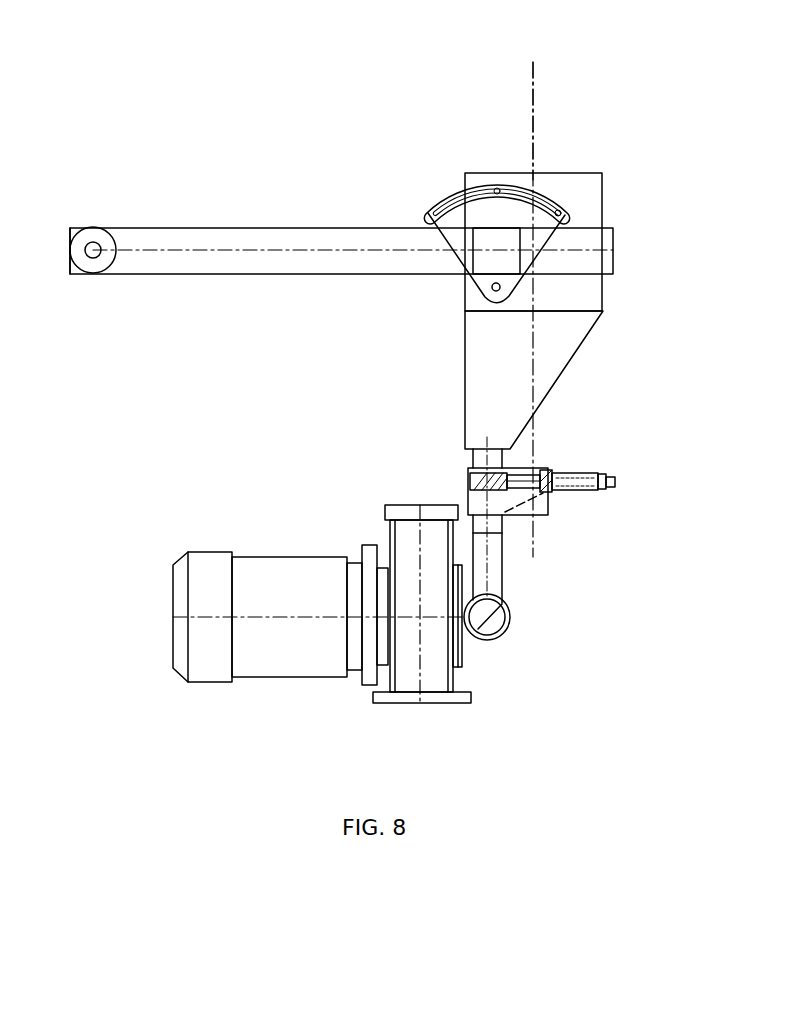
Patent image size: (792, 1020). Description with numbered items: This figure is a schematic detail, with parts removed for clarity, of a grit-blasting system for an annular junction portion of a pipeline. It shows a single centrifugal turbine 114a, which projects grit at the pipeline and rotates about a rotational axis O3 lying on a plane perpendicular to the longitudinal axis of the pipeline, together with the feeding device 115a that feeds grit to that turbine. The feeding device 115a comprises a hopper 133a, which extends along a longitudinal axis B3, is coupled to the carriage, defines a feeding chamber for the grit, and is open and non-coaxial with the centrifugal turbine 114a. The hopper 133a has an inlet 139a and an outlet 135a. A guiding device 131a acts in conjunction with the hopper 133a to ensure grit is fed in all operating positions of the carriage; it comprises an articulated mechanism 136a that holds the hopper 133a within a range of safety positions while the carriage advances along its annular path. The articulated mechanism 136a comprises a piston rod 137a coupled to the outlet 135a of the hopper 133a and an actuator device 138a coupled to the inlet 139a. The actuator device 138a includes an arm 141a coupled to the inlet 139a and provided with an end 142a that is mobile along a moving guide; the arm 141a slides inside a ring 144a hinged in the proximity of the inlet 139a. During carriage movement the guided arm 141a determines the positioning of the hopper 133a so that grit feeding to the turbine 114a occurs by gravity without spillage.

The feeding device 115a is at (363, 108).
The guiding device 131a is at (662, 472).
The hopper 133a is at (603, 293).
The outlet 135a is at (522, 457).
The articulated mechanism 136a is at (365, 190).
The piston rod 137a is at (495, 555).
The actuator device 138a is at (543, 130).
The inlet 139a is at (610, 167).
The arm 141a is at (263, 233).
The end 142a is at (95, 228).
The ring 144a is at (498, 249).
The centrifugal turbine 114a is at (278, 653).
The longitudinal axis B3 is at (528, 97).
The rotational axis O3 is at (183, 617).